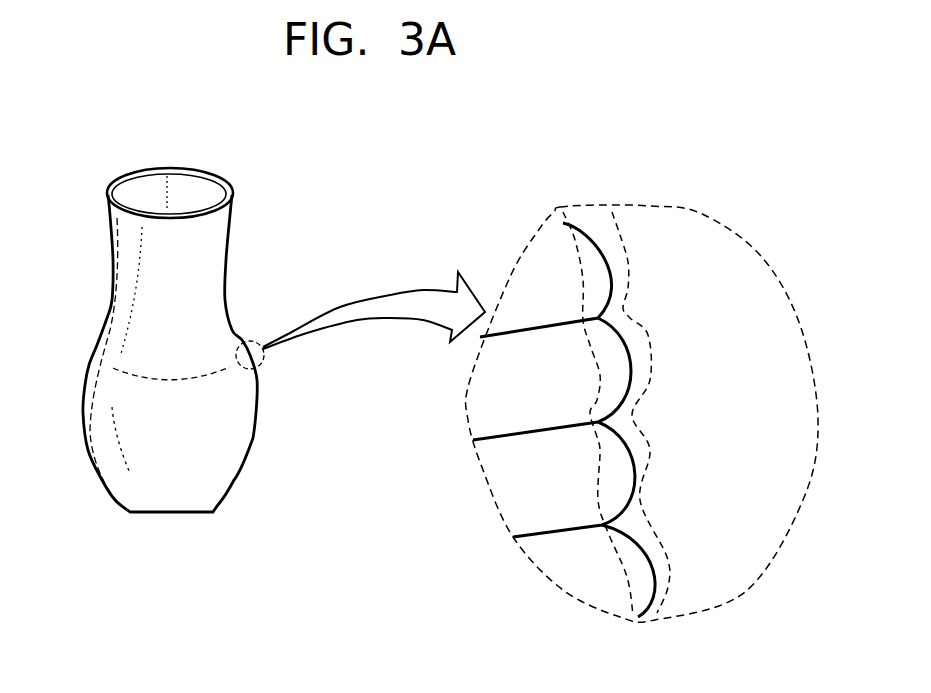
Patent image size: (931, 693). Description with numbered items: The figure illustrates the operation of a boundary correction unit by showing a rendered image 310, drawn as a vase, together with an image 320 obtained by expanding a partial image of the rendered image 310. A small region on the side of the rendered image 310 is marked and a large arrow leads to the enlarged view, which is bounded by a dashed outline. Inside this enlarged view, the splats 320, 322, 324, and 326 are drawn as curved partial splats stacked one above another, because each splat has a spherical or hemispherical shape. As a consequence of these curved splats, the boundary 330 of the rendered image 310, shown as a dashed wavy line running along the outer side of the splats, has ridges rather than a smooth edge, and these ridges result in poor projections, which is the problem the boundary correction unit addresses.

The rendered image 310 is at (278, 159).
The image obtained by expanding a partial image of the rendered image 320 is at (550, 272).
The splat 322 is at (497, 392).
The splat 324 is at (528, 492).
The splat 326 is at (580, 568).
The boundary of the rendered image 330 is at (668, 560).